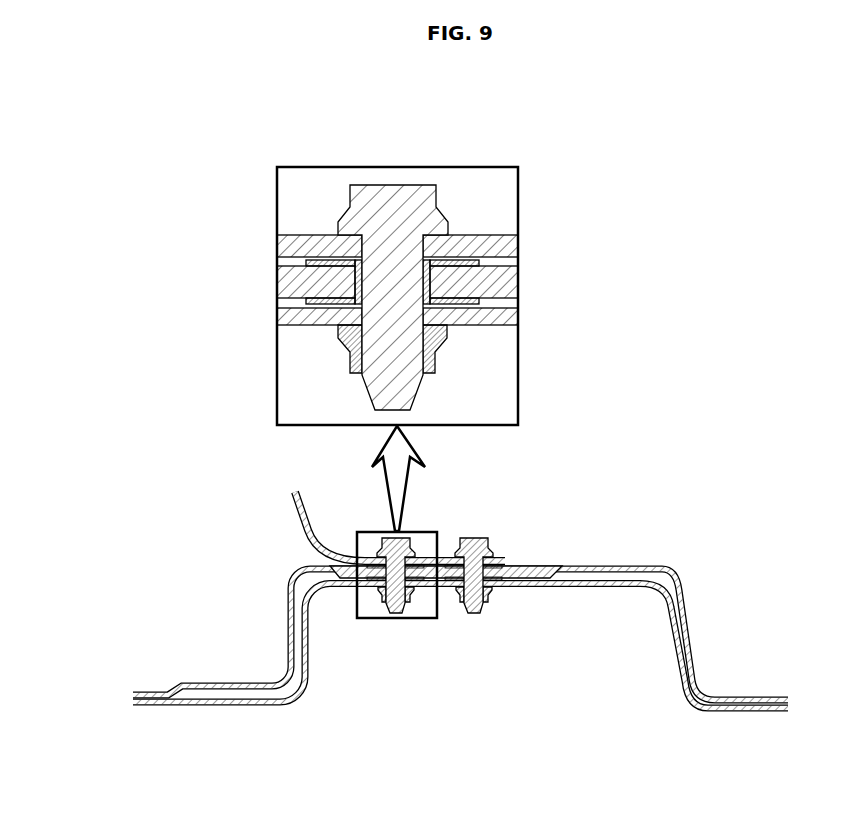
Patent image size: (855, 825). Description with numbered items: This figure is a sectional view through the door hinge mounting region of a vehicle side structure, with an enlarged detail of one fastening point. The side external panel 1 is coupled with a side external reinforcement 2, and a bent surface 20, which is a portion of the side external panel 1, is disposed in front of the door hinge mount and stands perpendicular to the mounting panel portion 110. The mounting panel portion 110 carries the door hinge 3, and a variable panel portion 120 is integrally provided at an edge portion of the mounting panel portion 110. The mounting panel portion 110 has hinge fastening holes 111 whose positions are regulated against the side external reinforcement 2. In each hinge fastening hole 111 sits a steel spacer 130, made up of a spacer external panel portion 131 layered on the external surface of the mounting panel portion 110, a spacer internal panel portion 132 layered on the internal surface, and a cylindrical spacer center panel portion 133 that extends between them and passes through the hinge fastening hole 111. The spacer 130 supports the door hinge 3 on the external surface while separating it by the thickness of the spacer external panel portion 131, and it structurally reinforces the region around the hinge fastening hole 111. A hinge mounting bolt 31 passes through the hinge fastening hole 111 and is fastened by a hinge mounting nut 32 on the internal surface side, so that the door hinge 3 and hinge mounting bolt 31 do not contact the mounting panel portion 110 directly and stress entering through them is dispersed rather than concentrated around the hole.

The side external panel 1 is at (205, 672).
The side external reinforcement 2 is at (218, 705).
The door hinge 3 is at (306, 238).
The bent surface 20 is at (289, 627).
The hinge mounting bolt 31 is at (378, 196).
The hinge mounting nut 32 is at (352, 357).
The mounting panel portion 110 is at (555, 567).
The hinge fastening hole 111 is at (371, 258).
The variable panel portion 120 is at (518, 566).
The spacer 130 is at (475, 332).
The spacer external panel portion 131 is at (436, 250).
The spacer internal panel portion 132 is at (447, 297).
The spacer center panel portion 133 is at (427, 287).